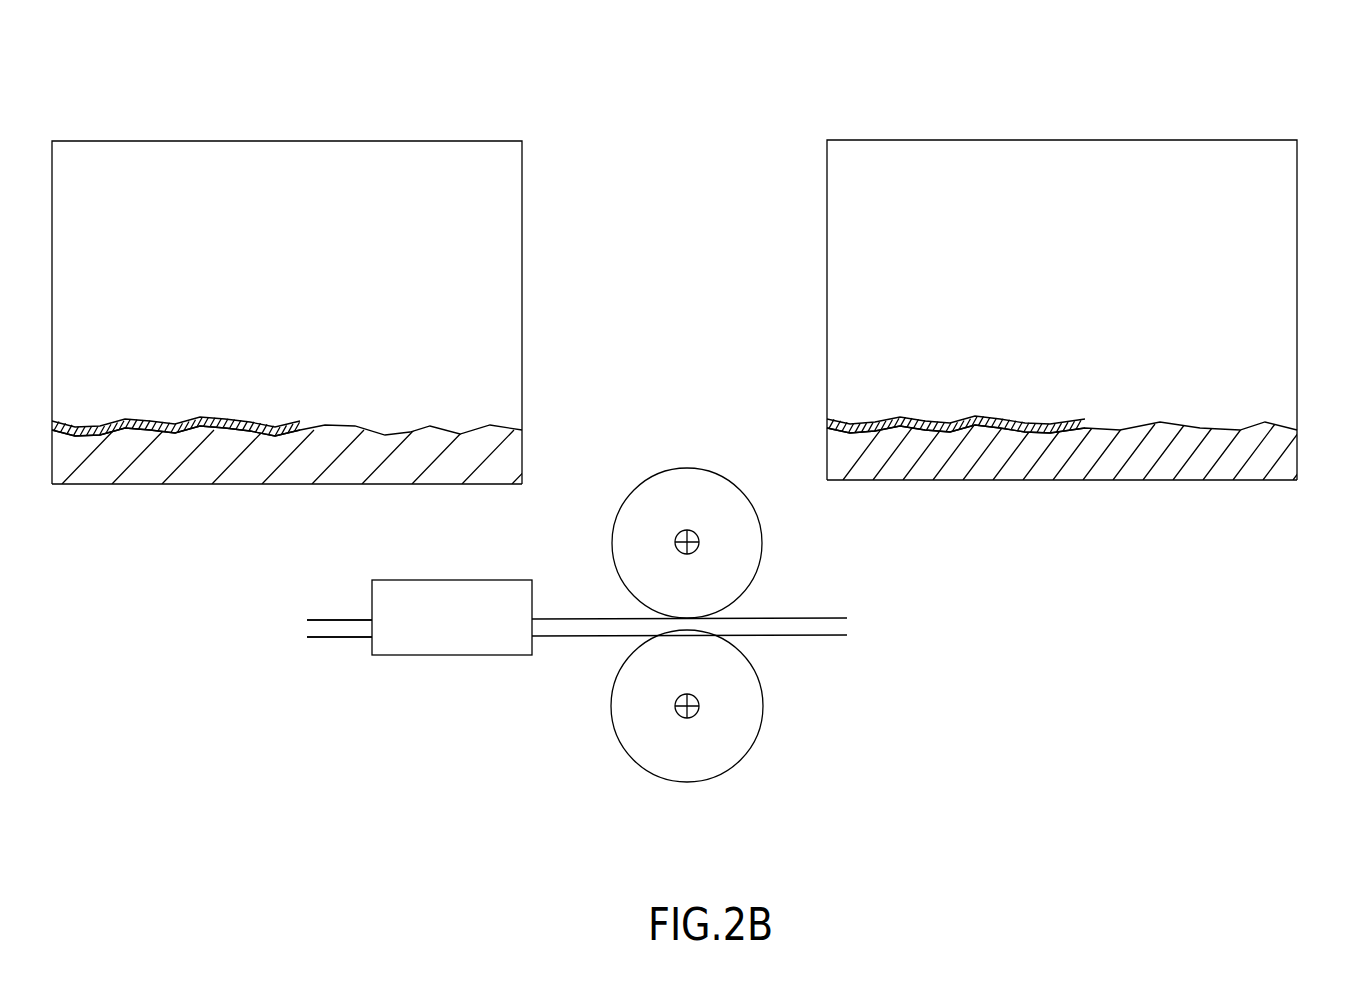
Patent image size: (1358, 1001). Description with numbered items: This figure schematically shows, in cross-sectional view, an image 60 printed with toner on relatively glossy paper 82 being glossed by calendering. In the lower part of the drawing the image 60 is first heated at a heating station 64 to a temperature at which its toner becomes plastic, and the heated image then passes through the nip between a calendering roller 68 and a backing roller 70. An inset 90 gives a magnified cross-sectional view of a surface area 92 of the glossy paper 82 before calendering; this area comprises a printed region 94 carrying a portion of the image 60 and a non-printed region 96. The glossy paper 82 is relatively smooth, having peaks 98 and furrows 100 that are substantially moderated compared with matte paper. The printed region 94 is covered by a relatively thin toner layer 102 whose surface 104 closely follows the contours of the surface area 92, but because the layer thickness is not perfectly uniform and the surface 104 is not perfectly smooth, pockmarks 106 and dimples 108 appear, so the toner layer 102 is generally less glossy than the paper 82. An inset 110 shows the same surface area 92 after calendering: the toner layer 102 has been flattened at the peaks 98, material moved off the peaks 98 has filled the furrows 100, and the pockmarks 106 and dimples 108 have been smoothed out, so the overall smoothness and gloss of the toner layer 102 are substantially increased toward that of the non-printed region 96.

The image 60 is at (352, 617).
The heating station 64 is at (455, 655).
The calendering roller 68 is at (695, 480).
The backing roller 70 is at (685, 767).
The glossy paper 82 is at (325, 428).
The inset 90 is at (465, 106).
The surface area 92 is at (322, 225).
The printed region 94 is at (206, 278).
The non-printed region 96 is at (455, 283).
The peaks 98 is at (336, 428).
The furrows 100 is at (386, 432).
The toner layer 102 is at (62, 430).
The surface of toner layer 104 is at (110, 433).
The pockmarks 106 is at (110, 430).
The dimples 108 is at (78, 432).
The inset 110 is at (1240, 108).